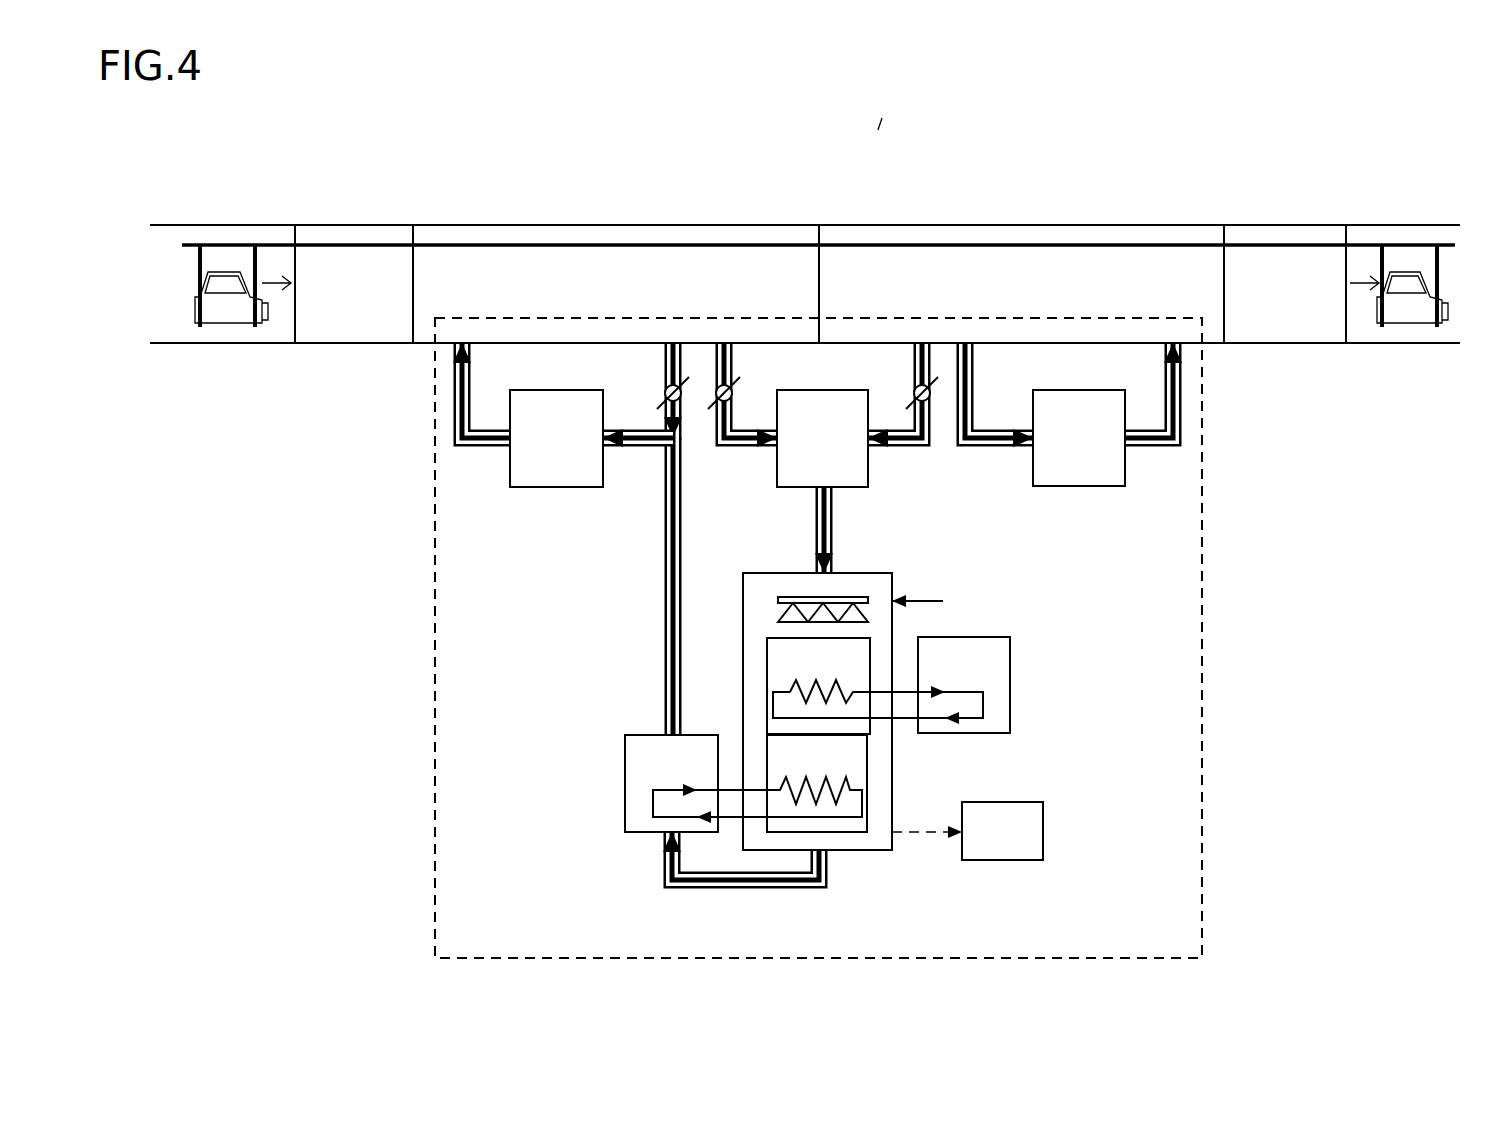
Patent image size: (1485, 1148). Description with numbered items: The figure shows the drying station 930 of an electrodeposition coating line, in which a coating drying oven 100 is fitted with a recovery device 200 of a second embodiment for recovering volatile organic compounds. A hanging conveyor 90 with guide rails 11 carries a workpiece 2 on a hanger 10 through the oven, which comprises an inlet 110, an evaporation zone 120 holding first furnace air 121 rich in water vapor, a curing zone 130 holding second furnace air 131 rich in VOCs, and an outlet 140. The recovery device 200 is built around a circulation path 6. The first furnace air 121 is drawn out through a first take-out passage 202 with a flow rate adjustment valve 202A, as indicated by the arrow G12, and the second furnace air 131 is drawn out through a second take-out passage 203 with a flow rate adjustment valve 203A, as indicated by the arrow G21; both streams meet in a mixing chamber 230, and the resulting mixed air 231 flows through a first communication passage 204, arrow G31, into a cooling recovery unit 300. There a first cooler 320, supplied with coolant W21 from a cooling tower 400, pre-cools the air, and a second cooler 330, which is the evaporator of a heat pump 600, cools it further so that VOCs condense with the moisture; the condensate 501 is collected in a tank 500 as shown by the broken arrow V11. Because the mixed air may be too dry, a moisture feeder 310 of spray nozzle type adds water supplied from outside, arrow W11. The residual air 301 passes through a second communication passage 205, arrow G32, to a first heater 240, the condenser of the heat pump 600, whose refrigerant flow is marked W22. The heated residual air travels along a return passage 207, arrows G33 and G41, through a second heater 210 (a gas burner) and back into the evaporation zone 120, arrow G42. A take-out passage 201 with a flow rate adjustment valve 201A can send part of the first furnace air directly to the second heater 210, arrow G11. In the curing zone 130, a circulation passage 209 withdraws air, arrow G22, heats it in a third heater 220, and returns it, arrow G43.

The drying station 930 is at (889, 124).
The coating drying oven 100 is at (806, 217).
The inlet 110 is at (360, 235).
The evaporation zone 120 is at (660, 224).
The first furnace air 121 is at (510, 278).
The curing zone 130 is at (973, 224).
The second furnace air 131 is at (1140, 278).
The outlet 140 is at (1292, 224).
The hanger 10 is at (1440, 270).
The guide rails 11 is at (268, 245).
The hanging conveyor 90 is at (811, 225).
The workpiece 2 is at (1403, 357).
The circulation path 6 is at (635, 357).
The recovery device 200 is at (1205, 434).
The take-out passage from the evaporation zone 201 is at (635, 357).
The first take-out passage 202 is at (761, 360).
The second take-out passage 203 is at (922, 361).
The first communication passage 204 is at (803, 530).
The second communication passage 205 is at (726, 892).
The return passage to the evaporation zone 207 is at (592, 586).
The circulation passage in the curing zone 209 is at (1065, 364).
The flow rate adjustment valve 201A is at (682, 410).
The flow rate adjustment valve 202A is at (730, 405).
The flow rate adjustment valve 203A is at (930, 405).
The second heater 210 is at (555, 488).
The third heater 220 is at (1080, 488).
The mixing chamber 230 is at (870, 480).
The mixed air 231 is at (845, 488).
The first heater 240 is at (632, 735).
The cooling recovery unit 300 is at (895, 580).
The residual air 301 is at (810, 888).
The moisture feeder 310 is at (785, 597).
The first cooler 320 is at (767, 660).
The second cooler 330 is at (767, 745).
The cooling tower 400 is at (1012, 650).
The tank 500 is at (1045, 822).
The condensate 501 is at (1005, 804).
The heat pump 600 is at (640, 835).
The arrow G11 is at (665, 362).
The arrow G12 is at (733, 362).
The arrow G21 is at (913, 362).
The arrow G22 is at (973, 368).
The arrow G31 is at (835, 540).
The arrow G32 is at (748, 888).
The arrow G33 is at (663, 638).
The arrow G41 is at (640, 446).
The arrow G42 is at (490, 446).
The arrow G43 is at (1150, 446).
The arrow W11 is at (922, 605).
The coolant W21 is at (905, 718).
The flow of the refrigerant W22 is at (843, 818).
The broken arrow V11 is at (915, 836).